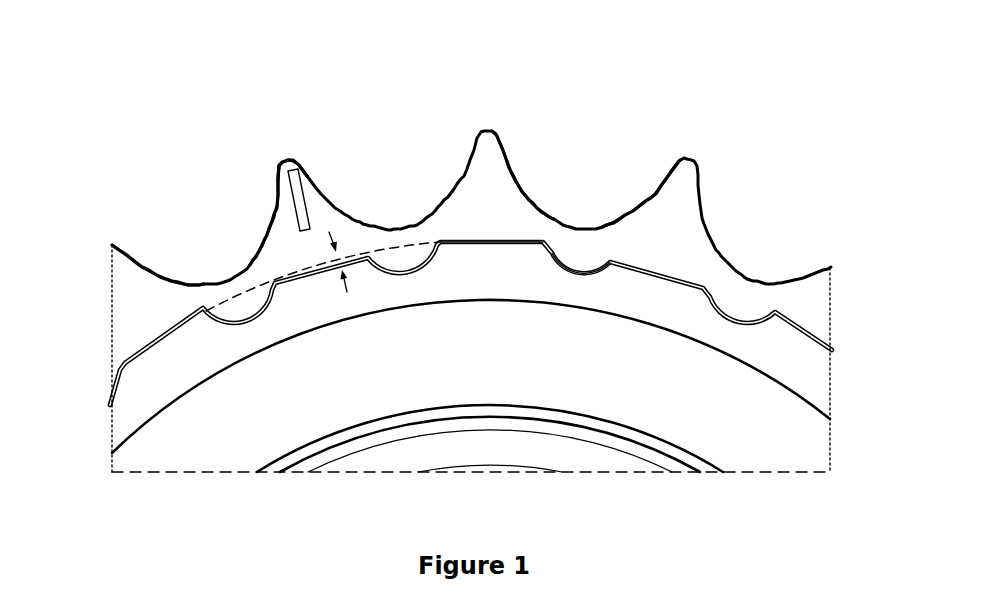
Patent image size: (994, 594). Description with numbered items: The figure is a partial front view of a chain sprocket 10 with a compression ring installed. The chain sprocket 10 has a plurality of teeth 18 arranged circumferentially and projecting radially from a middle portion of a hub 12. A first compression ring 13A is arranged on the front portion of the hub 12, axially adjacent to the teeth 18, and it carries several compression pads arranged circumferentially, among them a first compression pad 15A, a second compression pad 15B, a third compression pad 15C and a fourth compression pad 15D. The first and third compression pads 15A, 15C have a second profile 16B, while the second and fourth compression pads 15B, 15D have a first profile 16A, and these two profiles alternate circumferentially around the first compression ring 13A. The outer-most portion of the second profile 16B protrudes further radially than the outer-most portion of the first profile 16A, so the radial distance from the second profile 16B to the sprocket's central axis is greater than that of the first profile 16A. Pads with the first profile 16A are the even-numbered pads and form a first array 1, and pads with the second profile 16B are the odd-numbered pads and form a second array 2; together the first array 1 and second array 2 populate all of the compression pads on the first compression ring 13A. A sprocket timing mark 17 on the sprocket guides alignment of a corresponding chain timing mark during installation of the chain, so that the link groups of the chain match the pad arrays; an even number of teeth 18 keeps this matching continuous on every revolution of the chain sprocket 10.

The first array 1 is at (689, 283).
The second array 2 is at (451, 232).
The chain sprocket 10 is at (788, 198).
The hub 12 is at (147, 455).
The first compression ring 13A is at (578, 263).
The first compression pad 15A is at (162, 348).
The second compression pad 15B is at (310, 290).
The third compression pad 15C is at (502, 250).
The fourth compression pad 15D is at (675, 292).
The first profile 16A is at (329, 278).
The second profile 16B is at (186, 326).
The sprocket timing mark 17 is at (299, 166).
The teeth 18 is at (306, 167).